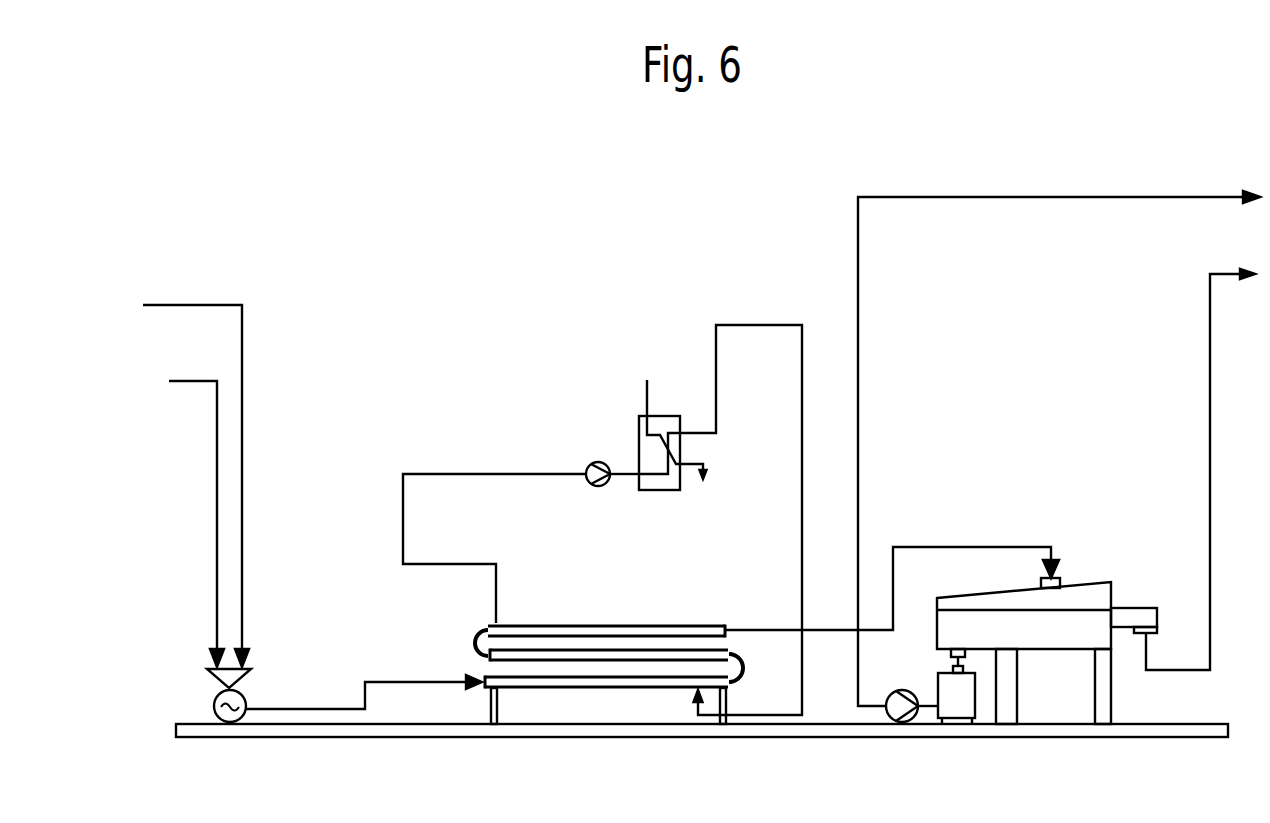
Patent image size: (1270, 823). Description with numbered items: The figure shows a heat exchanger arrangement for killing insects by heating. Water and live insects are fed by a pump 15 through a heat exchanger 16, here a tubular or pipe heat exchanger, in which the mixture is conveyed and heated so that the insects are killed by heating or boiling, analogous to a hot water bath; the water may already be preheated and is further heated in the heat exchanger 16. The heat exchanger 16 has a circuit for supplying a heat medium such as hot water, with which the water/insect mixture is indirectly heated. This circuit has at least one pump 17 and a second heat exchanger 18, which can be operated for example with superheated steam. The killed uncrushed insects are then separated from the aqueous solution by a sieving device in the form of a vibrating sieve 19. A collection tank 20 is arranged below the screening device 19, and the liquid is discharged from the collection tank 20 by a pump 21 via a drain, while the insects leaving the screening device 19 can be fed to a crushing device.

The pump 15 is at (197, 513).
The heat exchanger 16 is at (609, 661).
The pump 17 is at (586, 465).
The second heat exchanger 18 is at (673, 435).
The vibrating sieve 19 is at (1047, 626).
The collection tank 20 is at (892, 598).
The pump 21 is at (875, 692).